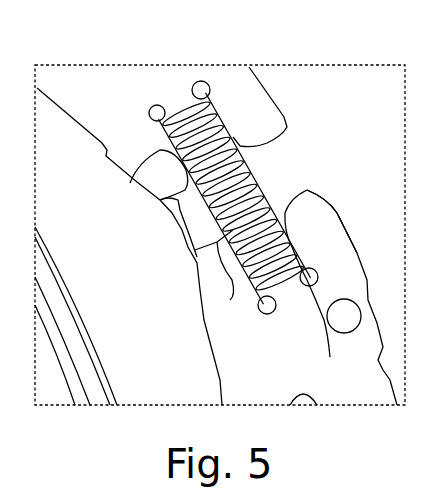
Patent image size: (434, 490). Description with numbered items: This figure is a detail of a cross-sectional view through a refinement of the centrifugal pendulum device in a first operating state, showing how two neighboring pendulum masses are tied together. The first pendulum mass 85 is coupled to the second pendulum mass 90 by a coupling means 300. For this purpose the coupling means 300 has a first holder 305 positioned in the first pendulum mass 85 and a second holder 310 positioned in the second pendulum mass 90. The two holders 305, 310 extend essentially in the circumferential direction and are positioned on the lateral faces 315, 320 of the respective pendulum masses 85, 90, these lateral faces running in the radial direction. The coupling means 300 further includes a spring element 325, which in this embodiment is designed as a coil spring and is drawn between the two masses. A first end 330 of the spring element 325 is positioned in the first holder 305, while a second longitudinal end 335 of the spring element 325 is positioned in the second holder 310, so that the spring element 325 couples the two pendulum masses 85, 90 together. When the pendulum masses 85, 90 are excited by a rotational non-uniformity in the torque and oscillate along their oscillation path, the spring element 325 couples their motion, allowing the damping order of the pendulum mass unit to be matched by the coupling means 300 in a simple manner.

The first pendulum mass 85 is at (260, 110).
The second pendulum mass 90 is at (330, 243).
The coupling means 300 is at (288, 146).
The first holder 305 is at (140, 180).
The second holder 310 is at (305, 284).
The lateral face 315 is at (178, 200).
The lateral face 320 is at (305, 194).
The spring element 325 is at (225, 278).
The first end 330 is at (190, 100).
The second longitudinal end 335 is at (326, 333).